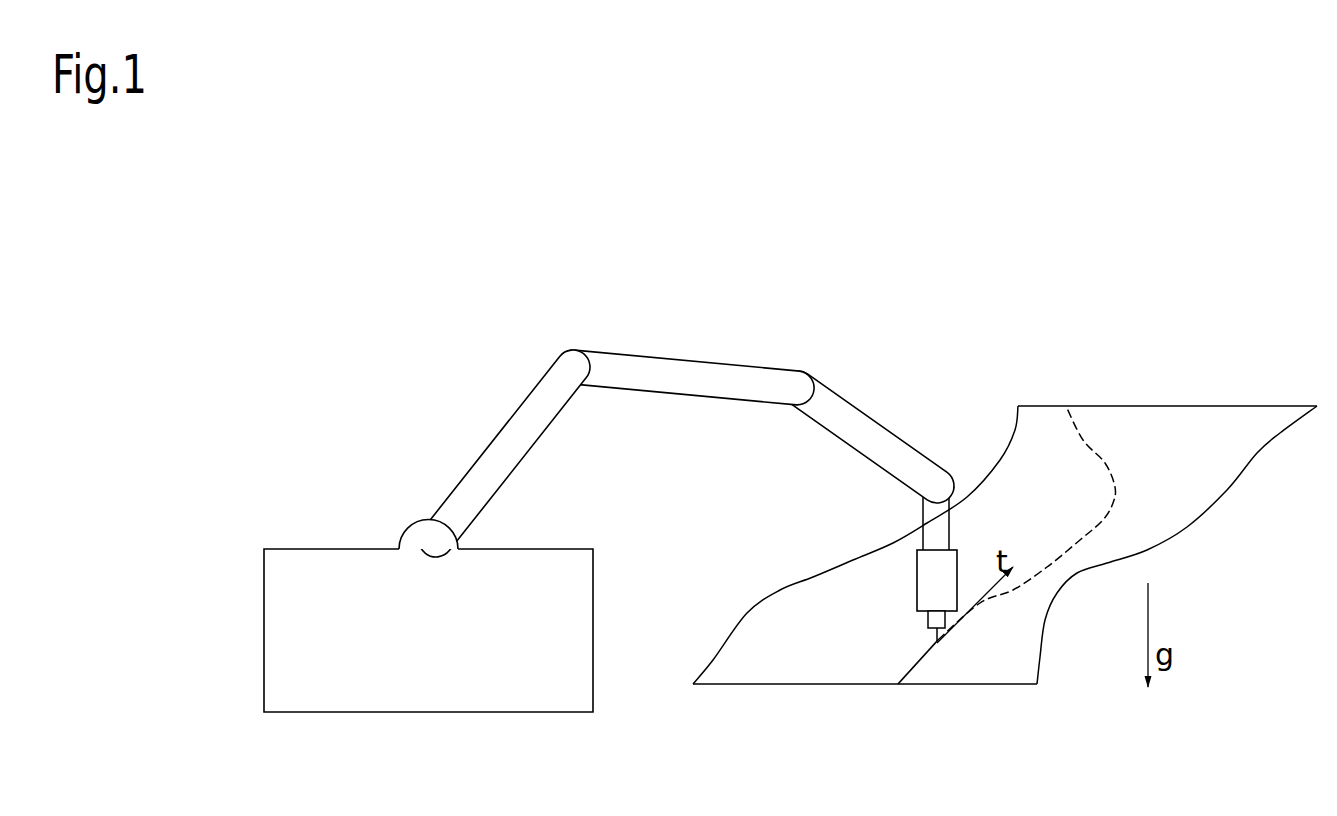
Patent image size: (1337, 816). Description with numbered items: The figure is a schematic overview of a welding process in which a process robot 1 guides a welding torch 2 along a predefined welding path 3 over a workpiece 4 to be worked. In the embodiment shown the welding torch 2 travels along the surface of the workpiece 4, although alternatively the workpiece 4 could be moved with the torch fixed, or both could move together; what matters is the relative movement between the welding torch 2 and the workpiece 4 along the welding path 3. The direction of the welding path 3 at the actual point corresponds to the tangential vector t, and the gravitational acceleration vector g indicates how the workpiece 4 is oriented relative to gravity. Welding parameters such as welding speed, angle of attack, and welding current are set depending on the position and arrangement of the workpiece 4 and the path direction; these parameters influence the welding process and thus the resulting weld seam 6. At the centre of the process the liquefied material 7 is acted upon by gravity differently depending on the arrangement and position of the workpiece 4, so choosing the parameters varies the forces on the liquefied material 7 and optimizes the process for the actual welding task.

The process robot 1 is at (398, 449).
The welding torch 2 is at (933, 600).
The welding path 3 is at (1083, 437).
The workpiece 4 is at (1183, 445).
The weld seam 6 is at (912, 670).
The liquefied material 7 is at (937, 642).